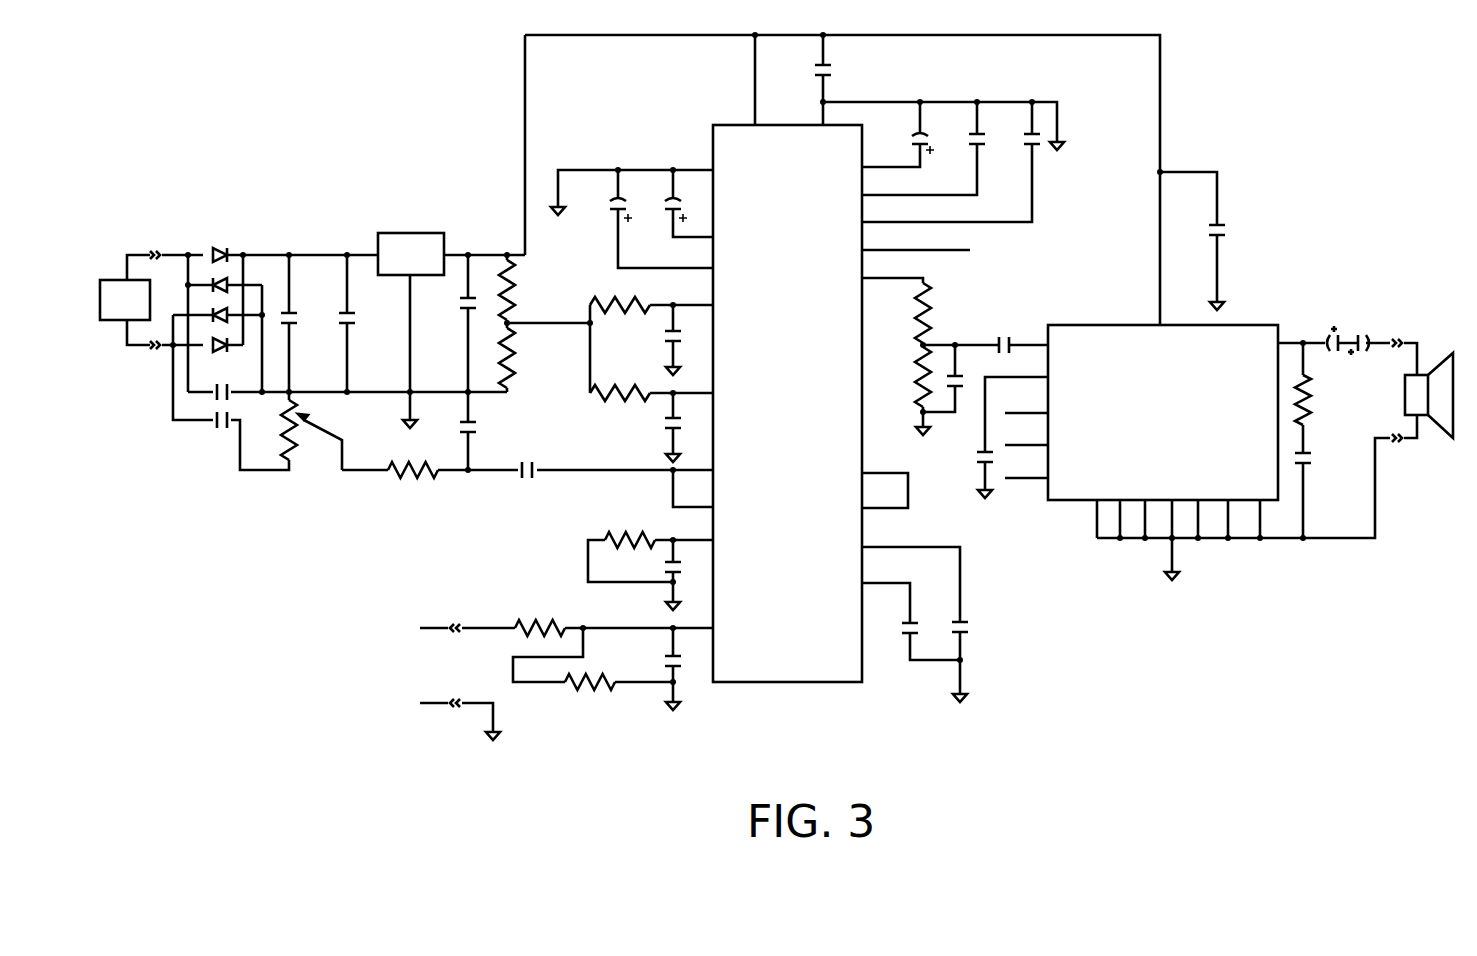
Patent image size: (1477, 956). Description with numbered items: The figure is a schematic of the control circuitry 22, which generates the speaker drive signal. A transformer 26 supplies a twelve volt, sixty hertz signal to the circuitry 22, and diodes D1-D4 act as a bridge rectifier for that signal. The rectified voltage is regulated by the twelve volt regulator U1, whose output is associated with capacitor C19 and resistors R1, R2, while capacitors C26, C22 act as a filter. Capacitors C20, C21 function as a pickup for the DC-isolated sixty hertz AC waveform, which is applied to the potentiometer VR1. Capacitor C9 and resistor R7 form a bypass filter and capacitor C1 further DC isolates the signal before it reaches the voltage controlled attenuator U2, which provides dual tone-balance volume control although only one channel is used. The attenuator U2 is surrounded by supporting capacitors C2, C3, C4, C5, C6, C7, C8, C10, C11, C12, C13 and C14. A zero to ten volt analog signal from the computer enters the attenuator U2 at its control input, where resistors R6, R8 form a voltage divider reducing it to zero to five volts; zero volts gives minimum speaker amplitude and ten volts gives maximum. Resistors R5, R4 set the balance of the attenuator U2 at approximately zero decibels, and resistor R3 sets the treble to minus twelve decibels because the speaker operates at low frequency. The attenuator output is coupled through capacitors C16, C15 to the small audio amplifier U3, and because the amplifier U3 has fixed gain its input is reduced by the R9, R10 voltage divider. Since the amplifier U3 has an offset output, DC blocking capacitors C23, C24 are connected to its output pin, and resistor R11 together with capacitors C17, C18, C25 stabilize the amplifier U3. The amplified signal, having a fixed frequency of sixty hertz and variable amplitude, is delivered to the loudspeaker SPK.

The control circuitry 22 is at (380, 160).
The transformer 26 is at (113, 320).
The 12 V regulator U1 is at (411, 254).
The voltage controlled attenuator U2 is at (787, 403).
The audio amplifier U3 is at (1163, 412).
The diodes D1-D4 is at (213, 287).
The capacitor C1 is at (540, 462).
The capacitor C2 is at (945, 618).
The capacitor C3 is at (903, 137).
The capacitor C4 is at (893, 619).
The capacitor C5 is at (602, 204).
The capacitor C6 is at (657, 572).
The capacitor C7 is at (1018, 132).
The capacitor C8 is at (657, 204).
The capacitor C9 is at (482, 427).
The capacitor C10 is at (957, 132).
The capacitor C11 is at (650, 429).
The capacitor C12 is at (647, 339).
The capacitor C13 is at (797, 70).
The capacitor C14 is at (647, 663).
The capacitor C15 is at (971, 371).
The capacitor C16 is at (1000, 335).
The capacitor C17 is at (963, 463).
The capacitor C18 is at (1237, 221).
The capacitor C19 is at (448, 316).
The capacitor C20 is at (221, 382).
The capacitor C21 is at (207, 431).
The capacitor C22 is at (363, 323).
The DC blocking capacitor C23 is at (1368, 335).
The DC blocking capacitor C24 is at (1315, 333).
The capacitor C25 is at (1320, 449).
The capacitor C26 is at (305, 323).
The resistor R1 is at (524, 290).
The resistor R2 is at (524, 358).
The resistor R3 is at (630, 529).
The resistor R4 is at (620, 383).
The resistor R5 is at (616, 296).
The resistor R6 is at (540, 615).
The resistor R7 is at (413, 482).
The resistor R8 is at (590, 698).
The resistor R9 is at (902, 313).
The resistor R10 is at (898, 377).
The resistor R11 is at (1324, 400).
The potentiometer VR1 is at (268, 426).
The loudspeaker SPK is at (1429, 395).